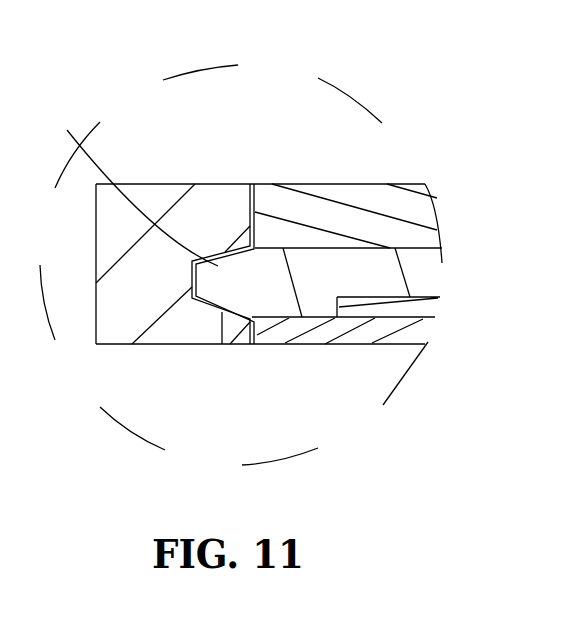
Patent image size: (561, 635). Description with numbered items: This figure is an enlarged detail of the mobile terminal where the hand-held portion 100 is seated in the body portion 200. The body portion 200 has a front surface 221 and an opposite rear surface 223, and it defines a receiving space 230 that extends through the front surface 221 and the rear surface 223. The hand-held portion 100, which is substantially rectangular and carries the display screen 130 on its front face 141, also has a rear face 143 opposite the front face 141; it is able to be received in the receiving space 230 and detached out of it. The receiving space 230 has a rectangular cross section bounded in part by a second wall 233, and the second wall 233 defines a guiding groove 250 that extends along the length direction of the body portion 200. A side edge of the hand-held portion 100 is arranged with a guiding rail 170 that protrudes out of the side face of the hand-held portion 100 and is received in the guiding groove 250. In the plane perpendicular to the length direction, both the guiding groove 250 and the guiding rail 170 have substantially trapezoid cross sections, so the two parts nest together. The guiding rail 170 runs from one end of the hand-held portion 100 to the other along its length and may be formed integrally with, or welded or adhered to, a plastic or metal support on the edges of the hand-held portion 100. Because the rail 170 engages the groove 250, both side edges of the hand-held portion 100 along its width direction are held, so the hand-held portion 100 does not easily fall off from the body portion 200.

The hand-held portion 100 is at (372, 184).
The display screen 130 is at (412, 333).
The front face 141 is at (362, 248).
The rear face 143 is at (323, 183).
The guiding rail 170 is at (133, 187).
The body portion 200 is at (155, 183).
The front surface 221 is at (158, 345).
The rear surface 223 is at (203, 180).
The receiving space 230 is at (256, 333).
The second wall 233 is at (249, 186).
The guiding groove 250 is at (225, 345).